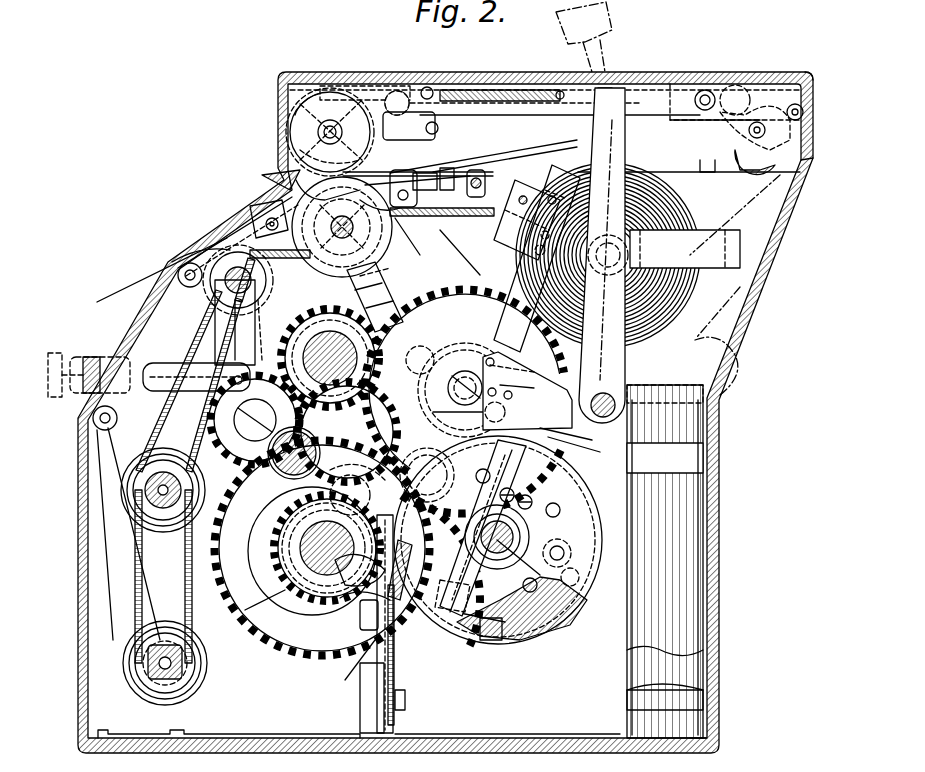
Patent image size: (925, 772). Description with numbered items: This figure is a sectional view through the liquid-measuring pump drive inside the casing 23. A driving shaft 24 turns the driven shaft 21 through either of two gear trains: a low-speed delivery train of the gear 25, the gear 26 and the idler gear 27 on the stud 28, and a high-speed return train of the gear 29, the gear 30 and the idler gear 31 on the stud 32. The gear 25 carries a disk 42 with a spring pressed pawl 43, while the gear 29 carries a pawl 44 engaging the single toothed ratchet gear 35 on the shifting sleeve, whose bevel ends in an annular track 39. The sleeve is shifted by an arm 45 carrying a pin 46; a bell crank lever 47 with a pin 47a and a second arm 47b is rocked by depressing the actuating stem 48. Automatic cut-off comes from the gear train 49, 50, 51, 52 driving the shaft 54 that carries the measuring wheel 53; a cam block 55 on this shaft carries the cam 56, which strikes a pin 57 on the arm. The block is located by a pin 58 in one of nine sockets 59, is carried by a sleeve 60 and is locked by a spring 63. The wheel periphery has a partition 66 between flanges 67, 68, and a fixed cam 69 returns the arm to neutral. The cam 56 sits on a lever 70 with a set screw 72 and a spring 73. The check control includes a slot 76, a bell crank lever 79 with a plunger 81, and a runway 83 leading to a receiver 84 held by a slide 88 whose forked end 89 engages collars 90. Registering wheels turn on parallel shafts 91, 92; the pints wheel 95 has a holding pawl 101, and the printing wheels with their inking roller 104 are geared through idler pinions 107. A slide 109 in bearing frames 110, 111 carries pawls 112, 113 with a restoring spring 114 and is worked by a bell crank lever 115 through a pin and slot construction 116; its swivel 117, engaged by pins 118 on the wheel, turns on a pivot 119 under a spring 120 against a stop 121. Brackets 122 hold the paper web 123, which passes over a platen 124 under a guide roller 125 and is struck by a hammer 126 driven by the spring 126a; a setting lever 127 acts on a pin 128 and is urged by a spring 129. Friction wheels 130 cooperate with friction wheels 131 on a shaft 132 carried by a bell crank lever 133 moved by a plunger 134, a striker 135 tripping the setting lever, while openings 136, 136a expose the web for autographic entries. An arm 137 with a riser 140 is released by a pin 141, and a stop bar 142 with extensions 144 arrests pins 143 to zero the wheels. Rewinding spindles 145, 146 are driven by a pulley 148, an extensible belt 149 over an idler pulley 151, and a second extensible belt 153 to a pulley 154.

The driven shaft 21 is at (330, 358).
The casing 23 is at (722, 606).
The driving shaft 24 is at (327, 548).
The gear 25 is at (282, 596).
The gear 26 is at (347, 432).
The intermediate idler gear 27 is at (294, 449).
The stud 28 is at (322, 548).
The gear 29 is at (278, 636).
The gear 30 is at (238, 296).
The intermediate idler gear 31 is at (255, 420).
The stud 32 is at (255, 420).
The single toothed ratchet gear 35 is at (357, 466).
The annular track 39 is at (264, 578).
The disk 42 is at (300, 614).
The spring pressed pawl 43 is at (358, 488).
The spring pressed pawl 44 is at (365, 612).
The arm 45 is at (350, 667).
The pin 46 is at (362, 577).
The bell crank lever 47 is at (400, 660).
The pin 47a is at (417, 597).
The arm 47b is at (402, 700).
The actuating stem 48 is at (527, 220).
The gear 49 is at (398, 350).
The gear 50 is at (464, 381).
The gear 51 is at (432, 378).
The gear 52 is at (585, 600).
The wheel 53 is at (566, 548).
The shaft 54 is at (523, 558).
The cam block 55 is at (565, 512).
The cam 56 is at (576, 435).
The pin 57 is at (447, 535).
The pin 58 is at (584, 450).
The sockets 59 is at (545, 584).
The sleeve 60 is at (515, 540).
The spring 63 is at (523, 585).
The partition 66 is at (545, 630).
The side flange 67 is at (470, 632).
The side flange 68 is at (492, 645).
The fixed cam 69 is at (427, 464).
The lever 70 is at (468, 575).
The set screw 72 is at (447, 596).
The spring 73 is at (532, 500).
The slot 76 is at (670, 80).
The bell crank lever 79 is at (748, 290).
The plunger 81 is at (600, 48).
The runway 83 is at (740, 350).
The receiver 84 is at (700, 418).
The slide 88 is at (300, 728).
The forked end 89 is at (692, 750).
The collars 90 is at (714, 718).
The shaft 91 is at (342, 130).
The shaft 92 is at (758, 165).
The wheel 95 is at (782, 198).
The spring pressed holding pawl 101 is at (812, 74).
The inking roller 104 is at (480, 118).
The idler pinions 107 is at (400, 92).
The slide 109 is at (510, 103).
The bearing frame 110 is at (356, 90).
The bearing frame 111 is at (690, 100).
The pawl 112 is at (432, 88).
The pawl 113 is at (768, 72).
The restoring spring 114 is at (522, 92).
The bell crank lever 115 is at (610, 145).
The pin and slot construction 116 is at (622, 100).
The swivel 117 is at (520, 428).
The pins 118 is at (608, 450).
The pivot 119 is at (470, 394).
The spring 120 is at (518, 362).
The stop 121 is at (531, 377).
The brackets 122 is at (705, 250).
The paper web 123 is at (136, 282).
The platen 124 is at (457, 186).
The guide roller 125 is at (480, 152).
The hammer 126 is at (560, 143).
The spring 126a is at (515, 232).
The setting lever 127 is at (400, 218).
The pin 128 is at (440, 214).
The spring 129 is at (423, 242).
The friction wheels 130 is at (292, 130).
The friction wheels 131 is at (290, 188).
The shaft 132 is at (460, 252).
The bell crank lever 133 is at (252, 316).
The plunger 134 is at (103, 372).
The striker 135 is at (342, 227).
The opening 136 is at (246, 224).
The opening 136a is at (228, 246).
The arm 137 is at (392, 280).
The riser 140 is at (378, 268).
The pin 141 is at (280, 295).
The stop bar 142 is at (330, 154).
The pin 143 is at (410, 126).
The extensions 144 is at (418, 177).
The spindle 145 is at (165, 528).
The spindle 146 is at (160, 690).
The pulley 148 is at (120, 510).
The extensible belt 149 is at (126, 417).
The idler pulley 151 is at (190, 260).
The extensible belt 153 is at (195, 460).
The pulley 154 is at (146, 684).